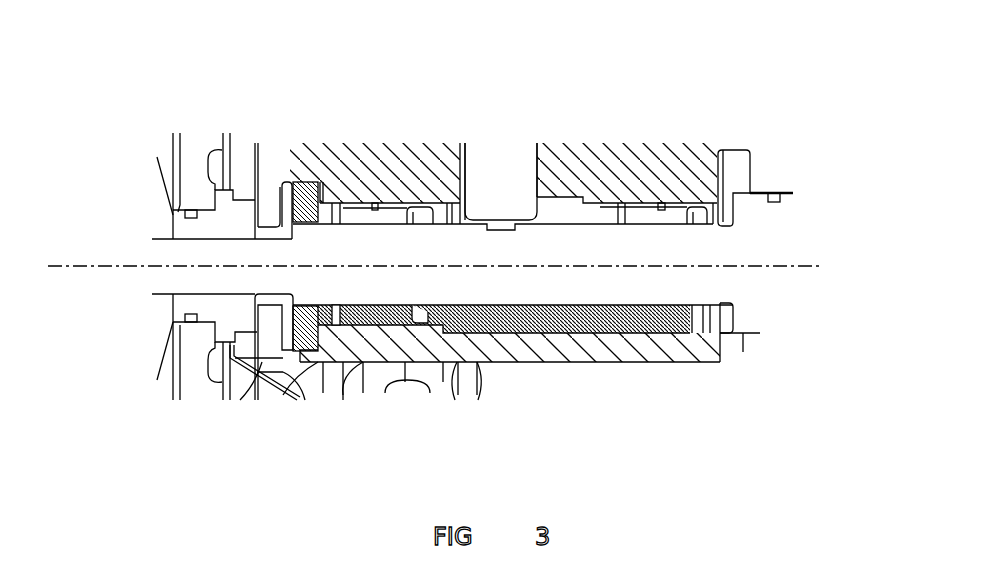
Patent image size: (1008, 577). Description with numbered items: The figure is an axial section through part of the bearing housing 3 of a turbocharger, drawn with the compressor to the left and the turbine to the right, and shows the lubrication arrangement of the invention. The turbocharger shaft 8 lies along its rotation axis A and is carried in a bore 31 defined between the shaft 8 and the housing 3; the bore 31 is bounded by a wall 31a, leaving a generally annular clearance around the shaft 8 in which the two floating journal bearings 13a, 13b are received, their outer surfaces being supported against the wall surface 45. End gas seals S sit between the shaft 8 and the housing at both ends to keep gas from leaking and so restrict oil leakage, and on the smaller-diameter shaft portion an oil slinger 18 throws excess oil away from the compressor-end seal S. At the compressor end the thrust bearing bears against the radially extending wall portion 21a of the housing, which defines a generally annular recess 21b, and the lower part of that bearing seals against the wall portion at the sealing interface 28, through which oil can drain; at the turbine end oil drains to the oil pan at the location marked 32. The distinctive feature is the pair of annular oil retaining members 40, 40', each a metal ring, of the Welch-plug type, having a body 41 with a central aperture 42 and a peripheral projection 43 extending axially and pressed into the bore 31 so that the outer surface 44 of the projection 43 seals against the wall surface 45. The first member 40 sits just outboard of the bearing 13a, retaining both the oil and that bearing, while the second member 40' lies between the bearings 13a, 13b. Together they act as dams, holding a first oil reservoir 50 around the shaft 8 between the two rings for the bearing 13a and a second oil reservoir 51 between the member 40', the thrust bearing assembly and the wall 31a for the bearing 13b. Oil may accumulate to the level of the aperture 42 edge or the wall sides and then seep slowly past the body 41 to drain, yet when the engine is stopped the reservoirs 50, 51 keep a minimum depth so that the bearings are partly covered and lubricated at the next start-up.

The bearing housing 3 is at (570, 122).
The turbocharger shaft 8 is at (667, 237).
The journal bearing 13a is at (673, 195).
The journal bearing 13b is at (358, 185).
The oil slinger 18 is at (217, 305).
The wall portion 21a is at (300, 182).
The annular recess 21b is at (285, 163).
The sealing interface 28 is at (300, 398).
The bore 31 is at (530, 362).
The wall 31a is at (575, 362).
The drain location 32 is at (730, 318).
The annular oil retaining member 40 is at (512, 350).
The annular oil retaining member 40' is at (392, 159).
The body 41 is at (697, 182).
The central aperture 42 is at (693, 223).
The peripheral projection 43 is at (713, 325).
The outer surface 44 is at (720, 333).
The wall surface 45 is at (707, 323).
The first oil reservoir 50 is at (473, 362).
The second oil reservoir 51 is at (350, 362).
The end gas seal S is at (190, 210).
The rotation axis A is at (85, 265).